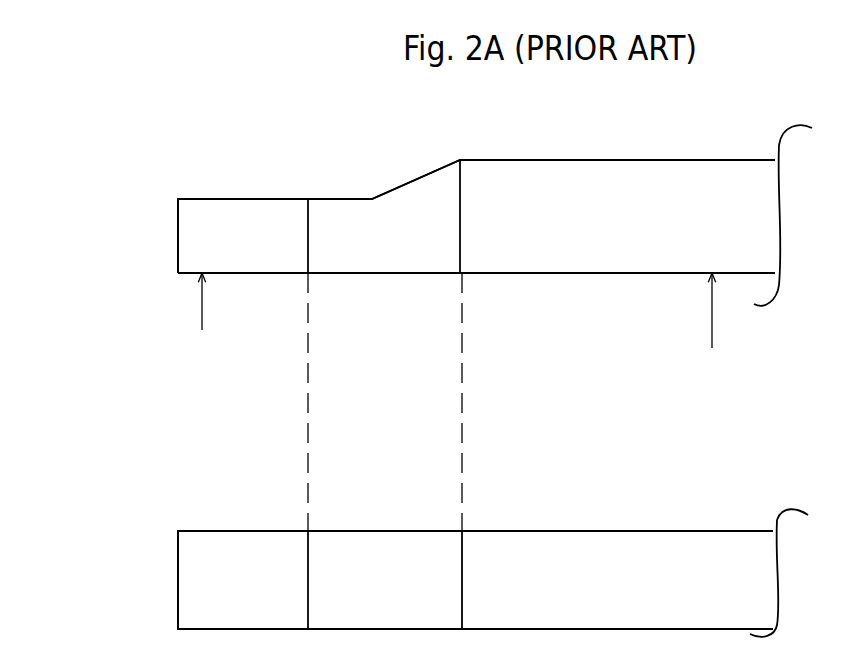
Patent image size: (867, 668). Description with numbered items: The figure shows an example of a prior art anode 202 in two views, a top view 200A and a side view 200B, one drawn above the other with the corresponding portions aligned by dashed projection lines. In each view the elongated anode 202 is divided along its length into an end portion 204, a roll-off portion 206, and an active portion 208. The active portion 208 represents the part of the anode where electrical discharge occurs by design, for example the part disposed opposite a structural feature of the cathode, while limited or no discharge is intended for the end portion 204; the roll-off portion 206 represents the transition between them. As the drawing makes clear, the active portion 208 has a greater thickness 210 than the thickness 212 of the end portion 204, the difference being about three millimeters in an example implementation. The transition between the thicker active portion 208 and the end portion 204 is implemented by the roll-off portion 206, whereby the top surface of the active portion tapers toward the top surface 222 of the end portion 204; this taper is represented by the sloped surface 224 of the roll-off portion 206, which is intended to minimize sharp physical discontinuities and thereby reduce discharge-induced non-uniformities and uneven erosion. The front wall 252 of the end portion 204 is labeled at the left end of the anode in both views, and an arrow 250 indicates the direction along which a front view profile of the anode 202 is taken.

The prior art anode 202 is at (727, 63).
The end portion 204 is at (262, 414).
The roll-off portion 206 is at (413, 394).
The active portion 208 is at (617, 394).
The thickness of active portion 210 is at (714, 160).
The thickness of end portion 212 is at (193, 199).
The top surface of end portion 222 is at (275, 199).
The sloped surface 224 is at (418, 180).
The arrow 250 is at (147, 297).
The front wall 252 is at (178, 240).
The top view 200A is at (132, 160).
The side view 200B is at (178, 483).